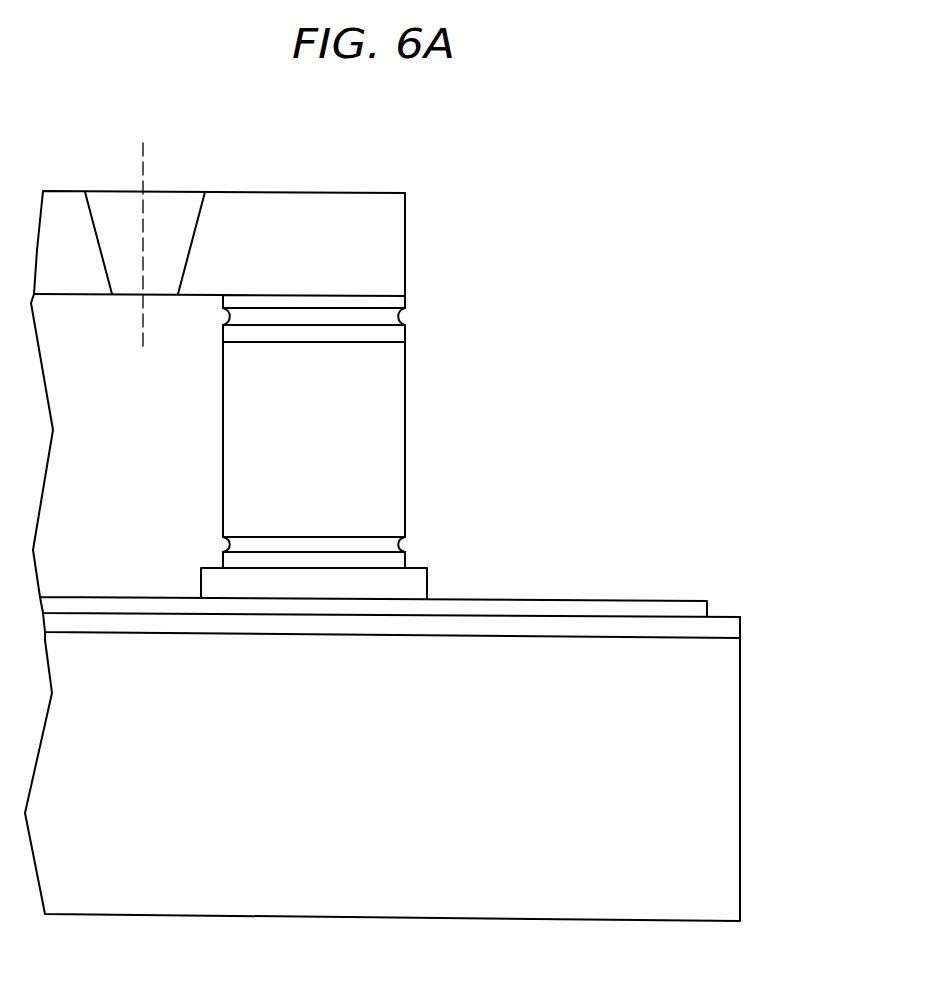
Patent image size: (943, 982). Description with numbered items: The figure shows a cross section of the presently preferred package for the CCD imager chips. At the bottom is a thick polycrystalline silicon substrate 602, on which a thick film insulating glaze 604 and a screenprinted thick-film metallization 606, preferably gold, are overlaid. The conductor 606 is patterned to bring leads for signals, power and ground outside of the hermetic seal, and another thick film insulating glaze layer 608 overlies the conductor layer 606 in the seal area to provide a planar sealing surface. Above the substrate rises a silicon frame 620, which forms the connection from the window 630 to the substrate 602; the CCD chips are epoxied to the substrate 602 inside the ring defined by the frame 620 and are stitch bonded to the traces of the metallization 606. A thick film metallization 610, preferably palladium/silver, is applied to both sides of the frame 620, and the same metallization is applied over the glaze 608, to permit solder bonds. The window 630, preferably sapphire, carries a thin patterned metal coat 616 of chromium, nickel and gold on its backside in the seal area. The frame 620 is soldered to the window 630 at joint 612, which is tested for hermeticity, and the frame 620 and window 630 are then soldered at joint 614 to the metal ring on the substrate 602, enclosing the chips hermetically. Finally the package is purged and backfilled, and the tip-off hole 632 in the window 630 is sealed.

The polycrystalline silicon substrate 602 is at (741, 788).
The thick film insulating glaze 604 is at (741, 625).
The screenprinted thick-film metallization 606 is at (708, 612).
The thick film insulating glaze layer 608 is at (428, 582).
The thick film metallization 610 is at (406, 335).
The solder joint 612 is at (401, 318).
The solder joint 614 is at (401, 545).
The thin patterned metal coat 616 is at (406, 303).
The silicon frame 620 is at (406, 412).
The window 630 is at (407, 254).
The tip-off hole 632 is at (144, 191).